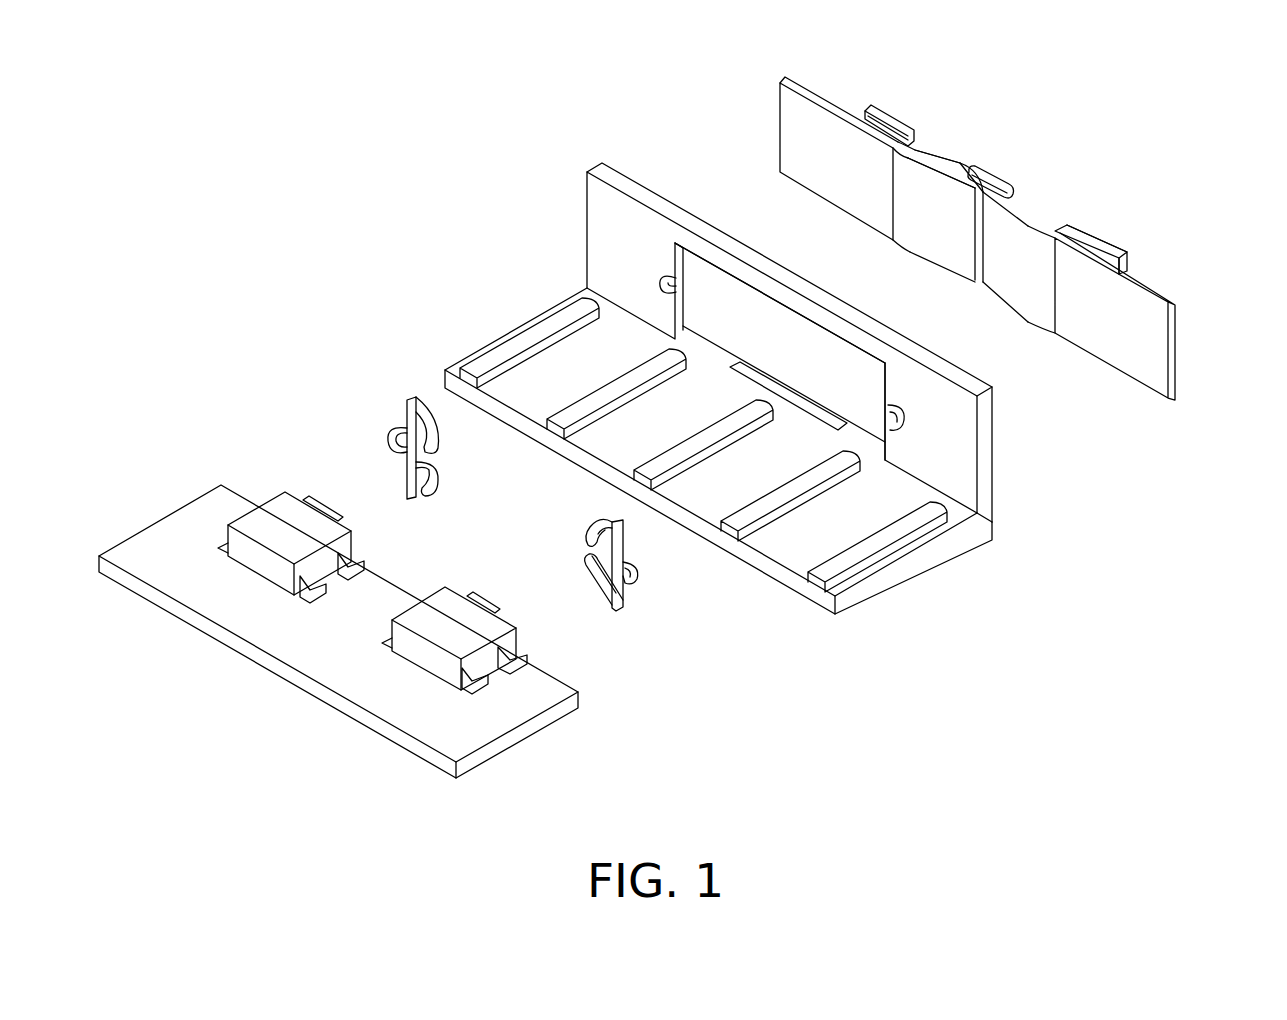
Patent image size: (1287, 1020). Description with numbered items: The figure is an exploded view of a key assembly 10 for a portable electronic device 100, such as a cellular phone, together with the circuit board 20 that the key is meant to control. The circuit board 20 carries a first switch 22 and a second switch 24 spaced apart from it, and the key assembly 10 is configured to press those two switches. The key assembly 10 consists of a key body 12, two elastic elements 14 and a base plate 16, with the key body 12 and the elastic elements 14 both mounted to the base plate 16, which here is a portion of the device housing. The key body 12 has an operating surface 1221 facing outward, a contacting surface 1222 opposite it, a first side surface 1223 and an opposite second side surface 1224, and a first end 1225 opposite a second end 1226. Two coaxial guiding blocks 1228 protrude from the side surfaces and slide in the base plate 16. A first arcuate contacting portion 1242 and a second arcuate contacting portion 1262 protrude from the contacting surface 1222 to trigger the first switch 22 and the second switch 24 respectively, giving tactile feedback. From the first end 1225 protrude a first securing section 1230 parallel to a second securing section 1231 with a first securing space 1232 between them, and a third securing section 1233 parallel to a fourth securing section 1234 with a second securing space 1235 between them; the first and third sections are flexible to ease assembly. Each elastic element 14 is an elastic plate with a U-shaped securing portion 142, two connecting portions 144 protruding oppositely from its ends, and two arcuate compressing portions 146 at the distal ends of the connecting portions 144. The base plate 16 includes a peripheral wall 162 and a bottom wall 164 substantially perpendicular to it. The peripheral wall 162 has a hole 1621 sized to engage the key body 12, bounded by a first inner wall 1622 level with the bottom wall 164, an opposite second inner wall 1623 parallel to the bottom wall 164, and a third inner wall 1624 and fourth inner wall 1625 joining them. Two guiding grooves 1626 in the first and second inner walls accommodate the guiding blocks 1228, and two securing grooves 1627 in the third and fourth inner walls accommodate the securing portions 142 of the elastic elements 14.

The portable electronic device 100 is at (373, 176).
The key assembly 10 is at (1131, 506).
The key body 12 is at (1109, 394).
The elastic elements 14 is at (654, 609).
The base plate 16 is at (926, 591).
The circuit board 20 is at (333, 656).
The first switch 22 is at (451, 609).
The second switch 24 is at (278, 521).
The securing portion 142 is at (637, 577).
The connecting portions 144 is at (622, 598).
The compressing portions 146 is at (590, 588).
The peripheral wall 162 is at (607, 230).
The bottom wall 164 is at (498, 345).
The hole 1621 is at (775, 328).
The first inner wall 1622 is at (877, 442).
The second inner wall 1623 is at (731, 285).
The third inner wall 1624 is at (675, 258).
The fourth inner wall 1625 is at (877, 391).
The guiding grooves 1626 is at (735, 378).
The securing grooves 1627 is at (663, 289).
The operating surface 1221 is at (965, 146).
The contacting surface 1222 is at (977, 225).
The first side surface 1223 is at (950, 134).
The second side surface 1224 is at (961, 289).
The first end 1225 is at (1070, 230).
The second end 1226 is at (927, 157).
The guiding blocks 1228 is at (1003, 178).
The first securing section 1230 is at (1175, 330).
The second securing section 1231 is at (1120, 250).
The first securing space 1232 is at (1125, 267).
The third securing section 1233 is at (812, 95).
The fourth securing section 1234 is at (880, 105).
The second securing space 1235 is at (867, 115).
The first contacting portion 1242 is at (1025, 275).
The second contacting portion 1262 is at (907, 200).